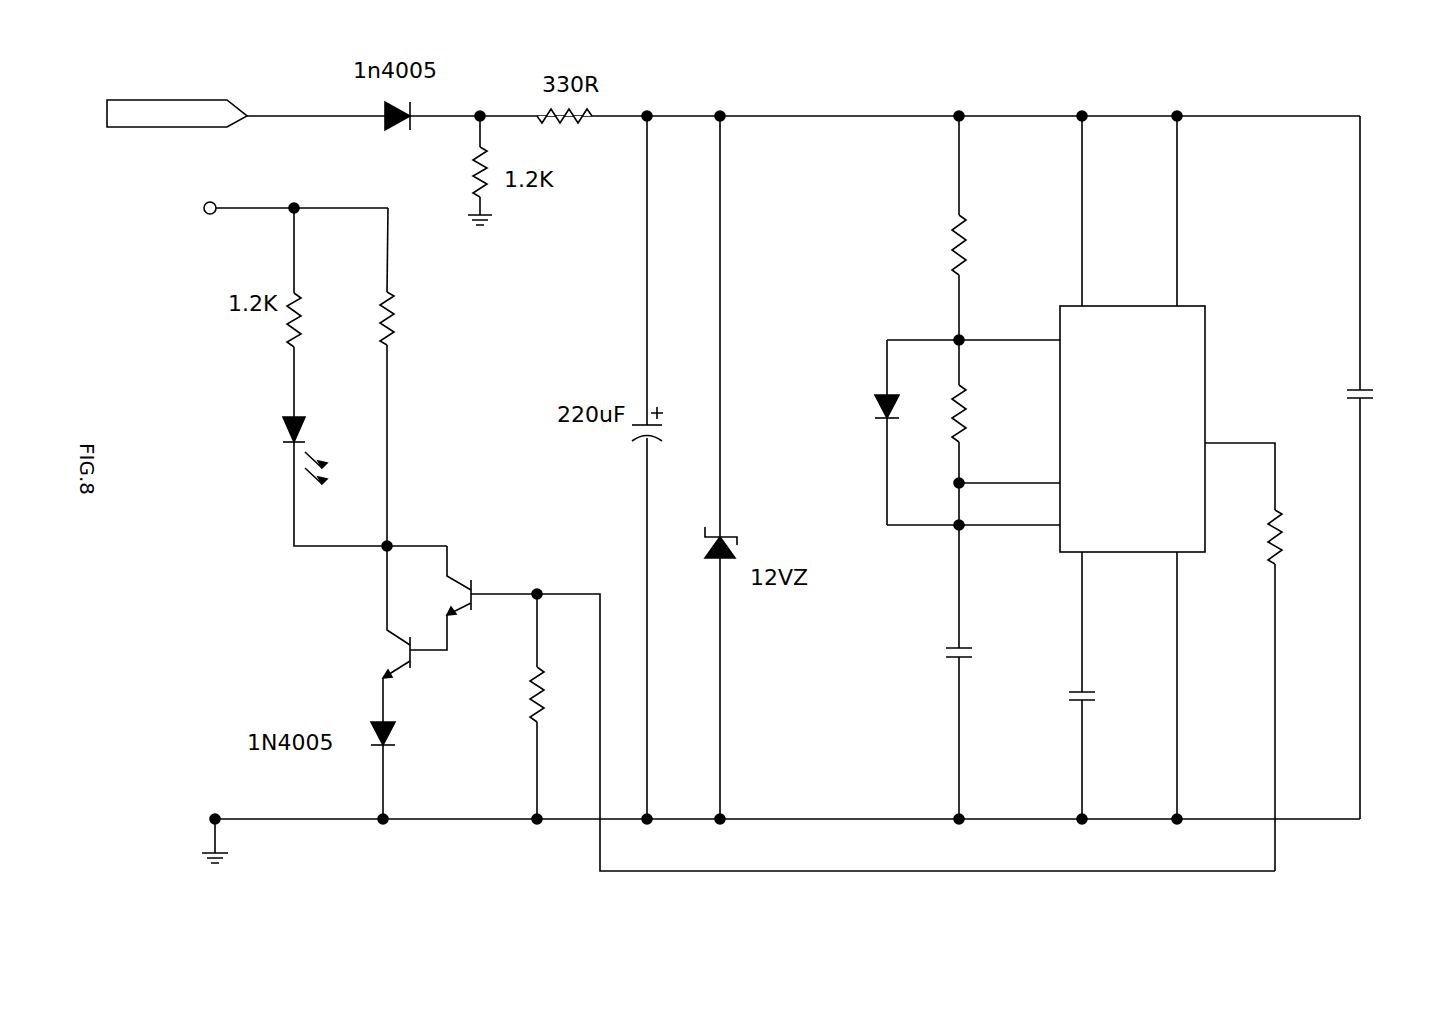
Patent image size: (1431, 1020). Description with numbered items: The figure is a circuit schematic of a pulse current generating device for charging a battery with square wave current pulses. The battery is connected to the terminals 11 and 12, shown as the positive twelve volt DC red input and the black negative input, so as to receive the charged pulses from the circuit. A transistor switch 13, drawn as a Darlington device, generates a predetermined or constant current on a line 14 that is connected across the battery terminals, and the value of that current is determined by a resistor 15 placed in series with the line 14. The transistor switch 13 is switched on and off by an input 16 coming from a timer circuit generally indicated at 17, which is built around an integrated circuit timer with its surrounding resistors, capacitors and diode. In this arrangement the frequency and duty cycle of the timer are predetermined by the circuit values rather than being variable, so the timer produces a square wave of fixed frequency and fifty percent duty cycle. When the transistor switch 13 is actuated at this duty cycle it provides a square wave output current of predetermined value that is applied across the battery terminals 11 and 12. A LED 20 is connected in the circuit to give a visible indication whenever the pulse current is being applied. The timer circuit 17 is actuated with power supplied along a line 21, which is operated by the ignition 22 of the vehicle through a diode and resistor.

The terminal 11 is at (211, 217).
The terminal 12 is at (216, 812).
The transistor switch 13 is at (457, 565).
The line 14 is at (395, 447).
The resistor 15 is at (400, 283).
The input 16 is at (569, 588).
The timer circuit 17 is at (1028, 736).
The LED 20 is at (277, 450).
The line 21 is at (1007, 114).
The ignition 22 is at (167, 96).